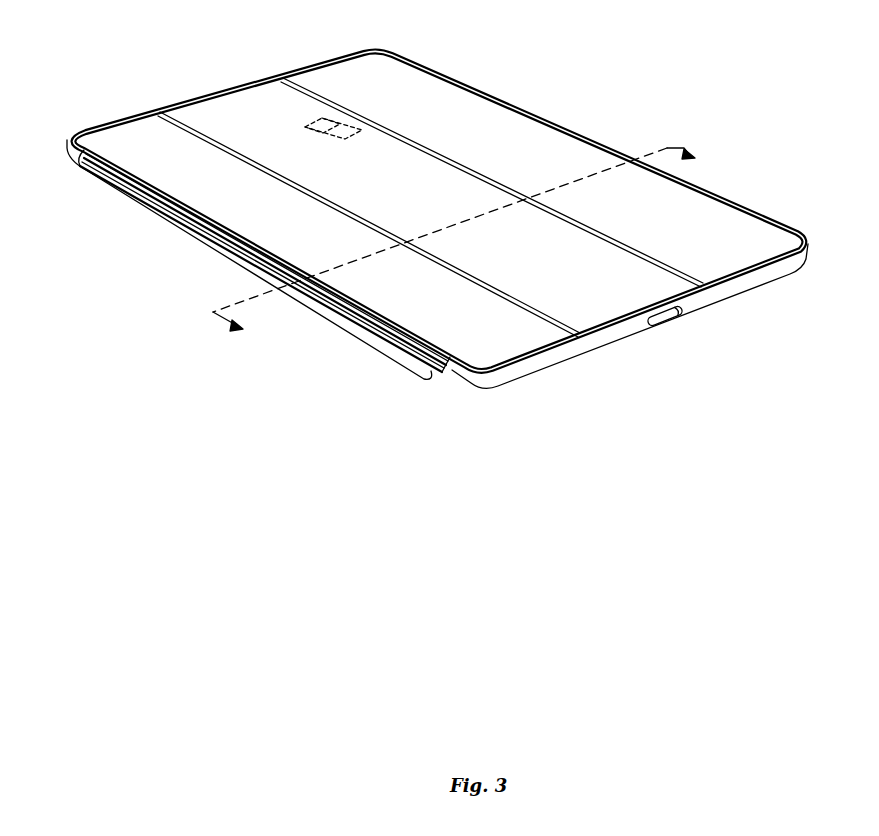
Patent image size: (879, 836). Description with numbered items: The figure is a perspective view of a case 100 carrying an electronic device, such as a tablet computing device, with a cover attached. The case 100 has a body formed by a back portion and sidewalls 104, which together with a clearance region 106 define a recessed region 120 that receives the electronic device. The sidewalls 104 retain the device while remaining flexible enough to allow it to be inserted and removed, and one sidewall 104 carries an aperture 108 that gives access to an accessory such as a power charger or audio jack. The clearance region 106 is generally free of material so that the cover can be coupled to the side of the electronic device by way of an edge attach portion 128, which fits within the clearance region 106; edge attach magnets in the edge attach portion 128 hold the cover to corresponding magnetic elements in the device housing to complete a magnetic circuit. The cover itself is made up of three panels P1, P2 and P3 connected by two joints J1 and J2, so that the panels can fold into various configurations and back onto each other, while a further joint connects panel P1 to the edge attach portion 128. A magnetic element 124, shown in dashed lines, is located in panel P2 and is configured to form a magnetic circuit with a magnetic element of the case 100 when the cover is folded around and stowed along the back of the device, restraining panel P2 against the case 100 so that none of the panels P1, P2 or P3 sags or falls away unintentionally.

The case 100 is at (417, 215).
The sidewall 104 is at (437, 276).
The clearance region 106 is at (210, 272).
The aperture 108 is at (665, 321).
The recessed region 120 is at (415, 195).
The magnetic element 124 is at (307, 134).
The edge attach portion 128 is at (148, 193).
The first panel P1 is at (117, 133).
The second panel P2 is at (240, 100).
The third panel P3 is at (350, 70).
The first joint J1 is at (63, 135).
The second joint J2 is at (293, 83).